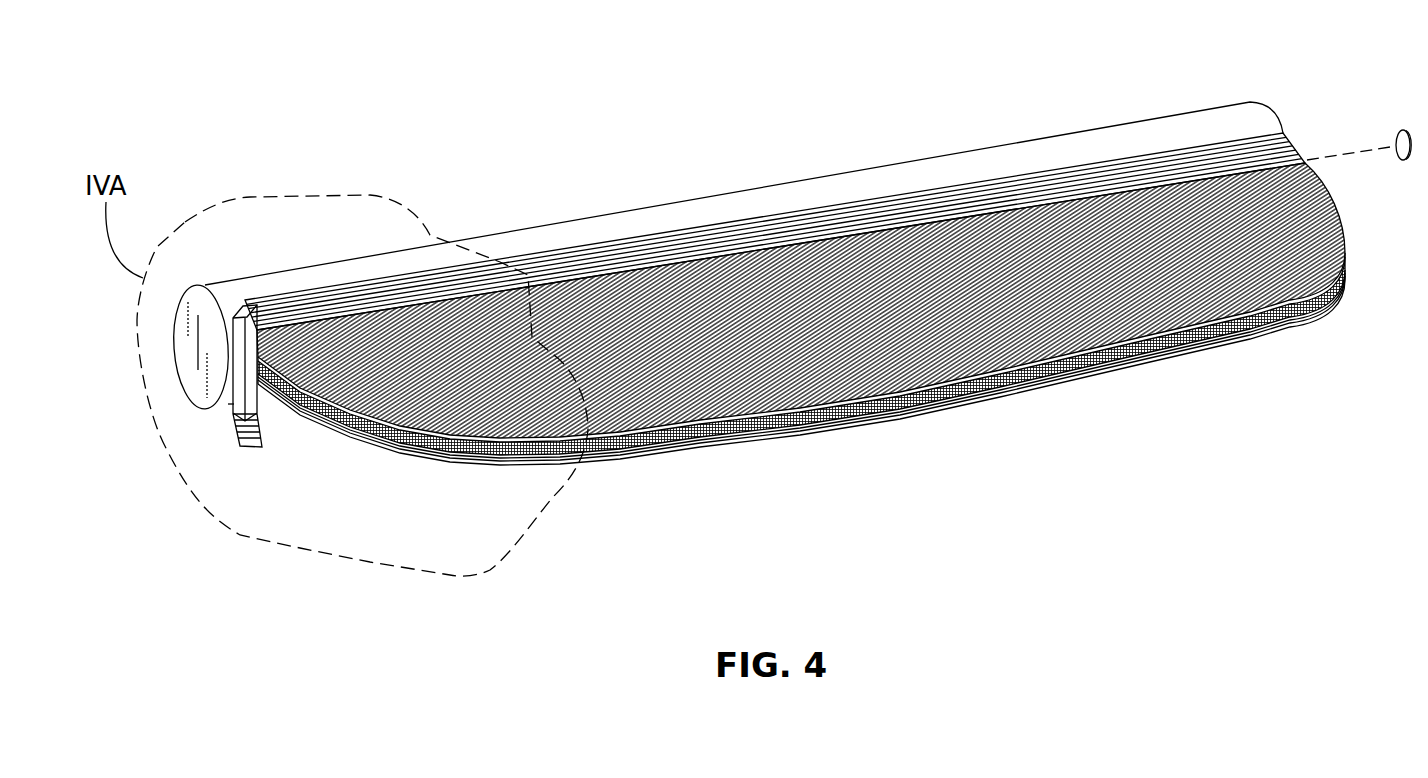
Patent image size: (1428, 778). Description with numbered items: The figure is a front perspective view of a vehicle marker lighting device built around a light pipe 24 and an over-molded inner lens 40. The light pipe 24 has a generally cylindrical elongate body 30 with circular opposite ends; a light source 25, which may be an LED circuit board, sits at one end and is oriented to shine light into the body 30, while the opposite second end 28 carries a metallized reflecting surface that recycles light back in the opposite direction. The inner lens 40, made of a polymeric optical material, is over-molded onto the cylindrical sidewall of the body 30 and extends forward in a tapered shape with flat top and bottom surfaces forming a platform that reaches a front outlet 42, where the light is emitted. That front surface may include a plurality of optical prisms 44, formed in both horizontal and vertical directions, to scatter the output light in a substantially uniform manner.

The light pipe 24 is at (1110, 100).
The light source 25 is at (1397, 135).
The second end 28 is at (197, 305).
The cylindrical elongate body 30 is at (860, 183).
The inner lens 40 is at (1315, 272).
The front outlet 42 is at (767, 430).
The optical prisms 44 is at (1005, 380).